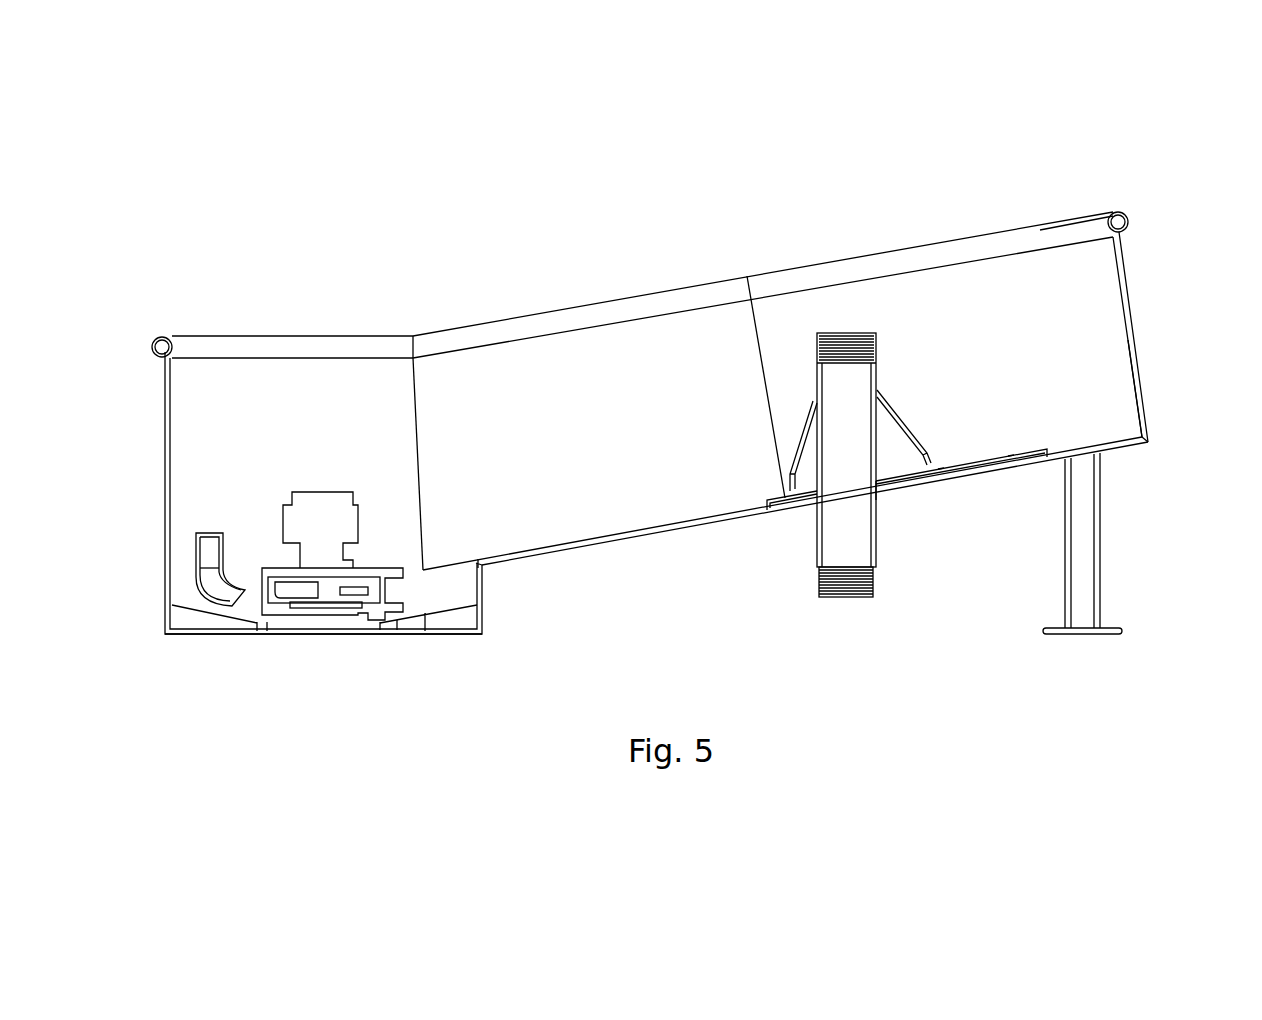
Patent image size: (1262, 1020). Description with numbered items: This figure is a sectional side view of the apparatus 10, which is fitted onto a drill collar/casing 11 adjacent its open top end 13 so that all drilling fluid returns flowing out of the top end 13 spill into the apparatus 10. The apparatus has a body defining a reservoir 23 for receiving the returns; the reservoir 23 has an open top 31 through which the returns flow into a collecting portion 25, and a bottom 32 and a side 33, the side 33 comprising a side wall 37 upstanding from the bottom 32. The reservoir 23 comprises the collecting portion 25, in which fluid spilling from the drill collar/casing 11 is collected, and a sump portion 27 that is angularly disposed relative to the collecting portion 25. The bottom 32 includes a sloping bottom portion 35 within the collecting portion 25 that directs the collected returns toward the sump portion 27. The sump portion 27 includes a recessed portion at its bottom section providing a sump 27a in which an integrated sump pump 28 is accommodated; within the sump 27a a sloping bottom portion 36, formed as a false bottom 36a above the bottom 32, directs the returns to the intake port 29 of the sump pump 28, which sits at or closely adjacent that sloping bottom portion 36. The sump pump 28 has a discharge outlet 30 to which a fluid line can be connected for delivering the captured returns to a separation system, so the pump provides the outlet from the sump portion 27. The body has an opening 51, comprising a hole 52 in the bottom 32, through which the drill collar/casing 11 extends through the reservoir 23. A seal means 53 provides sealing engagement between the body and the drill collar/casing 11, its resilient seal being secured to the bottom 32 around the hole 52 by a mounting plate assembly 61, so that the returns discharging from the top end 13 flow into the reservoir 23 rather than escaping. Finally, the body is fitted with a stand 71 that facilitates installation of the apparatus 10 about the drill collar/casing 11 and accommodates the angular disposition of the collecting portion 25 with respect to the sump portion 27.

The apparatus 10 is at (432, 311).
The drill collar/casing 11 is at (810, 369).
The open top end 13 is at (847, 330).
The reservoir 23 is at (767, 310).
The collecting portion 25 is at (1087, 272).
The sump portion 27 is at (225, 377).
The sump 27a is at (482, 580).
The sump pump 28 is at (320, 523).
The intake port 29 is at (373, 618).
The discharge outlet 30 is at (203, 549).
The open top 31 is at (833, 262).
The bottom 32 is at (218, 633).
The side 33 is at (1132, 332).
The sloping bottom portion 35 is at (593, 543).
The sloping bottom portion 36 is at (207, 613).
The false bottom 36a is at (425, 613).
The side wall 37 is at (1142, 408).
The opening 51 is at (913, 487).
The hole 52 is at (880, 500).
The seal means 53 is at (900, 420).
The mounting plate assembly 61 is at (780, 510).
The stand 71 is at (1100, 570).